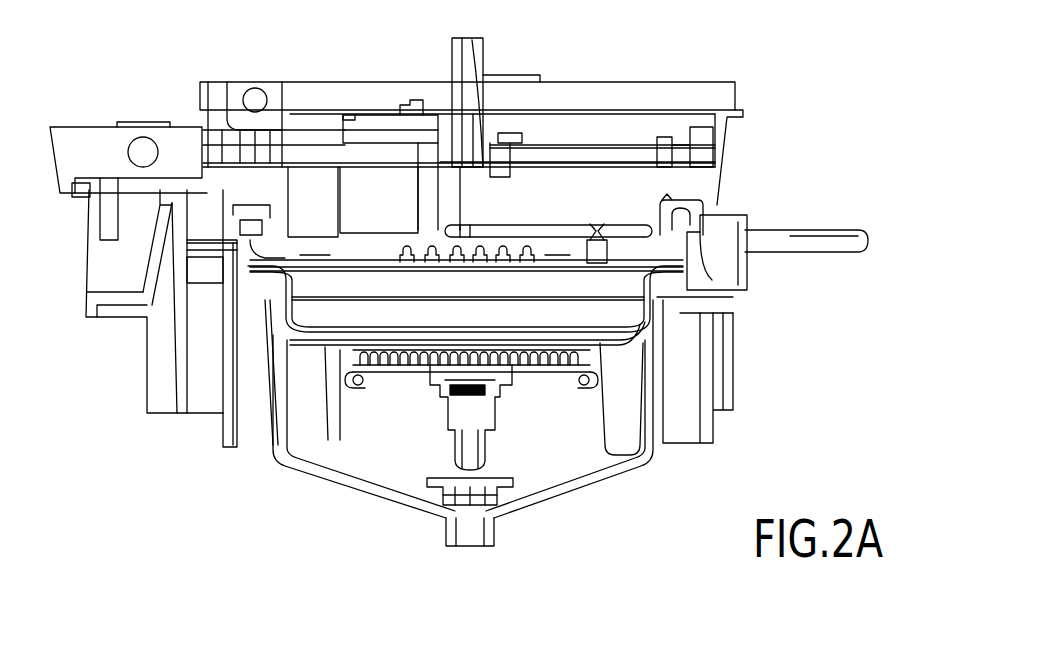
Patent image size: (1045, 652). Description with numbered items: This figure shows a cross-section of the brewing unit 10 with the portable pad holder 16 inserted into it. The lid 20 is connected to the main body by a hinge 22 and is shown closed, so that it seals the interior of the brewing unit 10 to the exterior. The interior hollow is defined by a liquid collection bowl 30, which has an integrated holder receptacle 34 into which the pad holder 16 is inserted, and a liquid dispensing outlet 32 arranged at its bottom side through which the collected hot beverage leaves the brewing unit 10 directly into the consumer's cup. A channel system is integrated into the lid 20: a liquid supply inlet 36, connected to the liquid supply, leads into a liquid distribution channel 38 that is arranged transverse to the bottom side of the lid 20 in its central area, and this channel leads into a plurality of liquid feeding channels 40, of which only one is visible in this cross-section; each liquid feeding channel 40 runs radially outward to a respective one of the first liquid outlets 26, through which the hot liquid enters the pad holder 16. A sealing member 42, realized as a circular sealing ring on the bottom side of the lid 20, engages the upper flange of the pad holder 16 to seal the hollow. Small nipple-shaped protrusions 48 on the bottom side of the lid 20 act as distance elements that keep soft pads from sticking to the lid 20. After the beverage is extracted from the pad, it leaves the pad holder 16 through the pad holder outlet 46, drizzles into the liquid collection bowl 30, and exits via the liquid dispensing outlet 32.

The brewing unit 10 is at (820, 85).
The portable pad holder 16 is at (783, 238).
The lid 20 is at (638, 97).
The hinge 22 is at (143, 148).
The first liquid outlets 26 is at (597, 255).
The liquid collection bowl 30 is at (660, 402).
The liquid dispensing outlet 32 is at (474, 530).
The holder receptacle 34 is at (604, 427).
The liquid supply inlet 36 is at (375, 134).
The liquid distribution channel 38 is at (447, 160).
The liquid feeding channel 40 is at (540, 233).
The sealing member 42 is at (255, 206).
The pad holder outlet 46 is at (472, 410).
The protrusions 48 is at (330, 263).